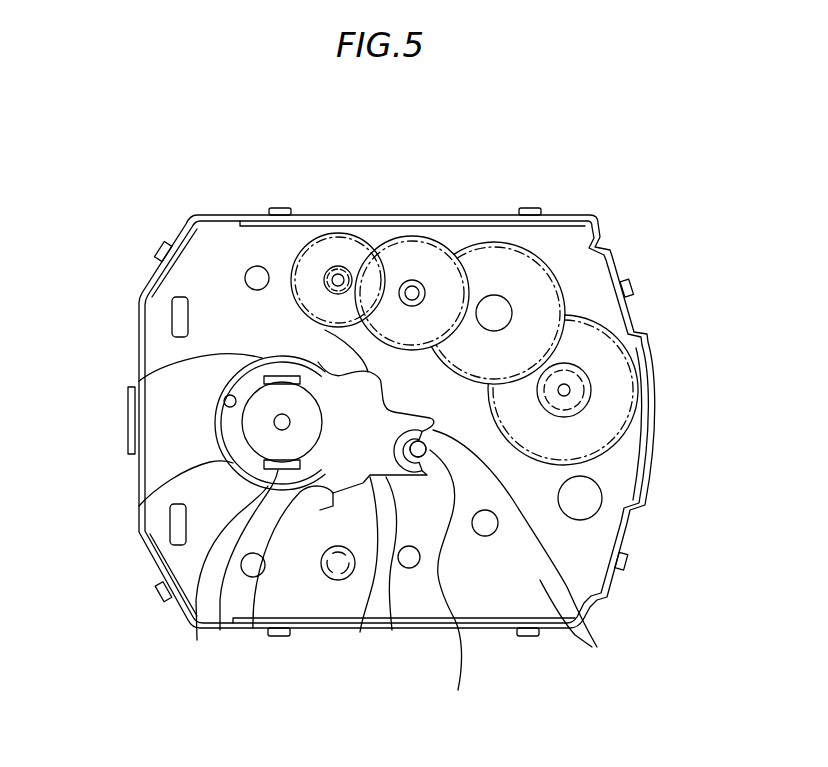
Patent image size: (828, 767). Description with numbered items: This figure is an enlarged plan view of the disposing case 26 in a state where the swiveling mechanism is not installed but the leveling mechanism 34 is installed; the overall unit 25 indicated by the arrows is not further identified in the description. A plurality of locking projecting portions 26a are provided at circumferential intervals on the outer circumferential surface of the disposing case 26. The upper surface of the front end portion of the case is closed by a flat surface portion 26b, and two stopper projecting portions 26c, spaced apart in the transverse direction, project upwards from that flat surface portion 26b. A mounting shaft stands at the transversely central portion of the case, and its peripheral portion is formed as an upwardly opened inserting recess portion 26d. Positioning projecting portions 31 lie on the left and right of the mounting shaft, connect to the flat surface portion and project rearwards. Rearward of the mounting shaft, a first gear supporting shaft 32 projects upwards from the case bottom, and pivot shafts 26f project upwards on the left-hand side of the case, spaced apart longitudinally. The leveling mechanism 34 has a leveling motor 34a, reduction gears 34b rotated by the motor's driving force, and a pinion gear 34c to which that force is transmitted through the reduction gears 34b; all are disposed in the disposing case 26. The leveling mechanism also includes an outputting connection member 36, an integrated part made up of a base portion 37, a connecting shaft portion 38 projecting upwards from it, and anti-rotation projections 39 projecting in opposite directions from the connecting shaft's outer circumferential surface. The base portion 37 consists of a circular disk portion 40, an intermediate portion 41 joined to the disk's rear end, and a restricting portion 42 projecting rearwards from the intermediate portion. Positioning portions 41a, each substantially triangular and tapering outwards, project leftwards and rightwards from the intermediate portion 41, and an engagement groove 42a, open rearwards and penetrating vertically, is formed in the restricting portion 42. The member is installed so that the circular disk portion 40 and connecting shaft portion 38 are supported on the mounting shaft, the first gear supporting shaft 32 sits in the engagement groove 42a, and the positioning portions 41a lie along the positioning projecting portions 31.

The drive unit 25 is at (582, 241).
The disposing case 26 is at (139, 506).
The locking projecting portion 26a is at (280, 208).
The flat surface portion 26b is at (210, 227).
The stopper projecting portion 26c is at (172, 318).
The inserting recess portion 26d is at (220, 396).
The pivot shaft 26f is at (409, 568).
The positioning projecting portion 31 is at (385, 385).
The first gear supporting shaft 32 is at (448, 583).
The leveling mechanism 34 is at (497, 290).
The leveling motor 34a is at (347, 243).
The reduction gear 34b is at (422, 240).
The pinion gear 34c is at (632, 388).
The outputting connection member 36 is at (240, 421).
The base portion 37 is at (142, 537).
The connecting shaft portion 38 is at (226, 447).
The anti-rotation projection 39 is at (139, 381).
The circular disk portion 40 is at (220, 630).
The intermediate portion 41 is at (253, 628).
The positioning portion 41a is at (387, 390).
The restricting portion 42 is at (588, 577).
The engagement groove 42a is at (592, 647).